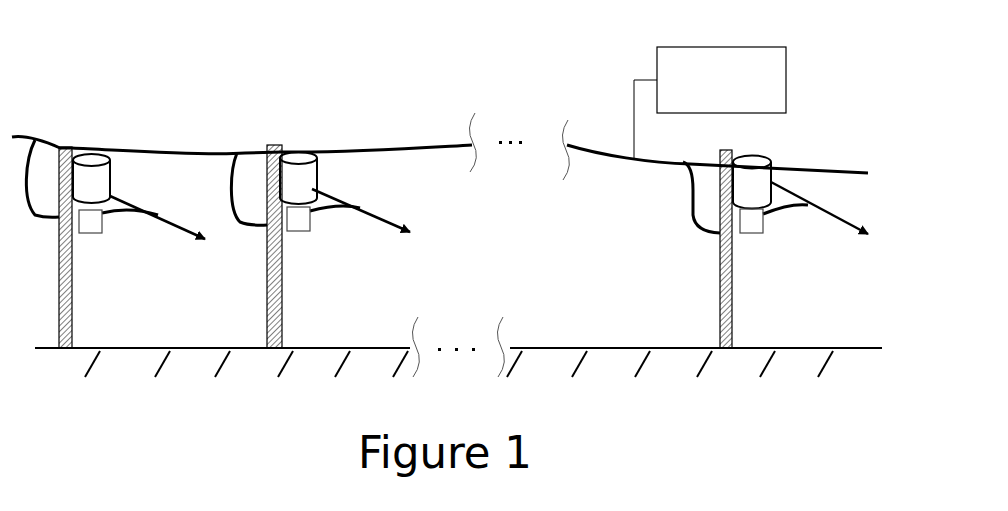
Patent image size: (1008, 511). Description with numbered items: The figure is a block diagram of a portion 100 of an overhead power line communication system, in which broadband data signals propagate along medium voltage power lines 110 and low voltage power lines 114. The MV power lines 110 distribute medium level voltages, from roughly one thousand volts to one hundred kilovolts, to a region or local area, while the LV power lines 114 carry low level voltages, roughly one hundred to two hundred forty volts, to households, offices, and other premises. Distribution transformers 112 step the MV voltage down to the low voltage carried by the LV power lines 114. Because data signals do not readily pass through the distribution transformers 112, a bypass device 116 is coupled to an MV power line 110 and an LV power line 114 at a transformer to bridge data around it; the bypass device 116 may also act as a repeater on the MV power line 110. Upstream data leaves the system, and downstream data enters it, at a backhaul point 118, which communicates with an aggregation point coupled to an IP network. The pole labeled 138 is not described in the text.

The portion of an overhead power line communication system 100 is at (423, 78).
The medium voltage power line 110 is at (151, 150).
The distribution transformer 112 is at (89, 160).
The low voltage power line 114 is at (187, 217).
The bypass device 116 is at (88, 234).
The backhaul point 118 is at (686, 50).
The utility pole 138 is at (734, 317).